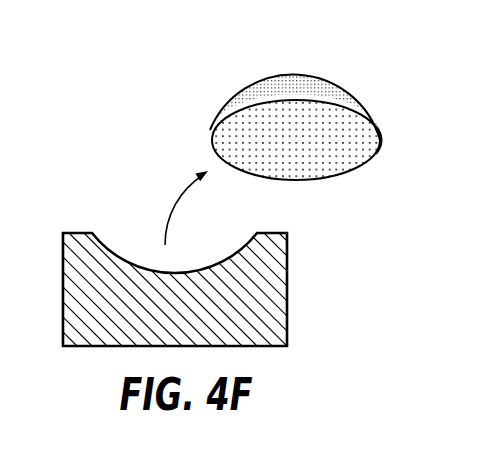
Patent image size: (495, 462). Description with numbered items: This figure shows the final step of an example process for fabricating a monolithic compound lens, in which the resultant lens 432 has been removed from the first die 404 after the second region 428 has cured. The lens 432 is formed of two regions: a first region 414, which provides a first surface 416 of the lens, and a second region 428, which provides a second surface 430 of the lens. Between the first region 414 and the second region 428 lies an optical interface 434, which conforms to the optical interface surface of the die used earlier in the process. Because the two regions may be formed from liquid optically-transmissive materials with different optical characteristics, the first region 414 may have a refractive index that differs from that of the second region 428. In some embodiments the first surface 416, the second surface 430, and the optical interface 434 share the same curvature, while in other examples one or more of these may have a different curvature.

The first die 404 is at (273, 316).
The first region 414 is at (235, 150).
The first surface 416 is at (300, 183).
The second region 428 is at (317, 90).
The second surface 430 is at (292, 76).
The lens 432 is at (381, 141).
The optical interface 434 is at (342, 106).